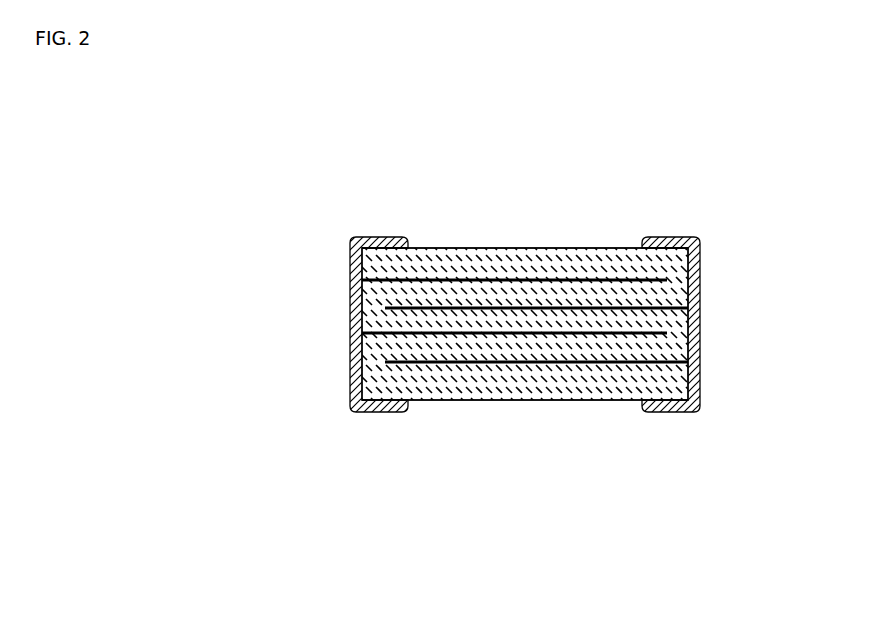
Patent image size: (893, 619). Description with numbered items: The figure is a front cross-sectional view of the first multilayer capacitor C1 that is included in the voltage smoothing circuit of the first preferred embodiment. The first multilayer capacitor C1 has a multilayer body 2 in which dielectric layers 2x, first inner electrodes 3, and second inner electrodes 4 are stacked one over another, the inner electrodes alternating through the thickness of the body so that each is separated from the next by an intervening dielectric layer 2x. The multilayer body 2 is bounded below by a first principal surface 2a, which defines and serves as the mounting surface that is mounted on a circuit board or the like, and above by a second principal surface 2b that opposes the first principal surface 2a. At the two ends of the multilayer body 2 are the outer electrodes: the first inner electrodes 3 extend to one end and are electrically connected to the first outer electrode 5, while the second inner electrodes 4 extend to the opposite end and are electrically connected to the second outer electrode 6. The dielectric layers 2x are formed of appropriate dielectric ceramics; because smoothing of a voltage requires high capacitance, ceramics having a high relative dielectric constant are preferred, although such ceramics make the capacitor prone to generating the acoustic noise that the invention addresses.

The first multilayer capacitor C1 is at (343, 195).
The multilayer body 2 is at (426, 241).
The first principal surface 2a is at (512, 400).
The second principal surface 2b is at (462, 248).
The dielectric layer 2x is at (582, 295).
The first inner electrode 3 is at (498, 303).
The second inner electrode 4 is at (543, 285).
The first outer electrode 5 is at (700, 334).
The second outer electrode 6 is at (350, 315).